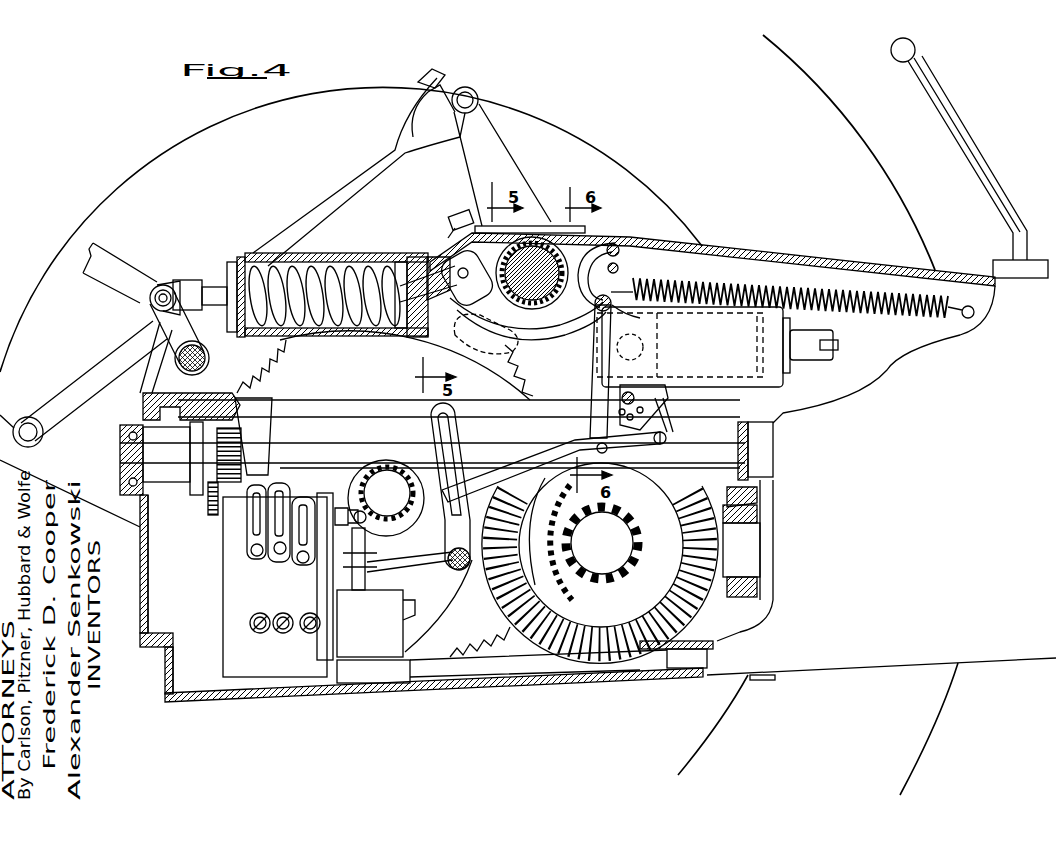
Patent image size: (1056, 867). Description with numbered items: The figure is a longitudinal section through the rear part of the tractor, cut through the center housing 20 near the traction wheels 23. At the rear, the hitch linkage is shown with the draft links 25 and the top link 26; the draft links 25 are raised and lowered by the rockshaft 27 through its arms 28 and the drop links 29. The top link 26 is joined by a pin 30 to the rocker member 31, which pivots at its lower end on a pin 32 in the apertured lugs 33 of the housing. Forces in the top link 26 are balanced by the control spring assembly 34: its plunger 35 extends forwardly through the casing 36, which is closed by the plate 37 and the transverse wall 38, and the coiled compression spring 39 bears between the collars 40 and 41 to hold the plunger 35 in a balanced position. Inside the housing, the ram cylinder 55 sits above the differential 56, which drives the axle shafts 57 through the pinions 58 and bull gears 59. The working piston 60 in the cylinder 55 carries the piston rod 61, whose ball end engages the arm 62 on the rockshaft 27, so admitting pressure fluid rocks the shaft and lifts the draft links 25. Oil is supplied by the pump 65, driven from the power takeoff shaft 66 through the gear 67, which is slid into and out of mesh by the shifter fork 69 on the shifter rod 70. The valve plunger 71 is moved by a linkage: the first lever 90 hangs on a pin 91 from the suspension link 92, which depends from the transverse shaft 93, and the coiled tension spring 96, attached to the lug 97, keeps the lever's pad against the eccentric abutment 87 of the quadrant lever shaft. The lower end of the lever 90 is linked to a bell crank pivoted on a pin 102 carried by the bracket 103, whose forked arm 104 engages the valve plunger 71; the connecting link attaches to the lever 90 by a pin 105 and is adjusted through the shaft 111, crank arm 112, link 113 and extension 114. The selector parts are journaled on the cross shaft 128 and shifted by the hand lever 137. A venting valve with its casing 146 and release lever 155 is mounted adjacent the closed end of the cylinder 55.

The center housing 20 is at (540, 690).
The rear wheels 23 is at (897, 187).
The draft links 25 is at (24, 398).
The top link 26 is at (118, 258).
The rockshaft 27 is at (500, 258).
The arms 28 is at (525, 167).
The drop links 29 is at (345, 180).
The pin 30 is at (165, 288).
The rocker member 31 is at (185, 330).
The pin 32 is at (178, 362).
The apertured lugs 33 is at (170, 378).
The control spring assembly 34 is at (368, 255).
The plunger 35 is at (210, 285).
The casing 36 is at (341, 256).
The plate 37 is at (232, 262).
The transverse wall 38 is at (420, 335).
The coiled compression spring 39 is at (320, 322).
The collar 40 is at (250, 262).
The collar 41 is at (399, 262).
The ram cylinder 55 is at (722, 387).
The differential 56 is at (690, 590).
The axle shafts 57 is at (408, 512).
The pinions 58 is at (600, 588).
The bull gears 59 is at (560, 580).
The working piston 60 is at (660, 352).
The piston rod 61 is at (555, 350).
The arm 62 is at (515, 340).
The pump 65 is at (222, 585).
The power takeoff shaft 66 is at (330, 466).
The gear 67 is at (240, 425).
The shifter fork 69 is at (268, 428).
The shifter rod 70 is at (325, 404).
The valve plunger 71 is at (372, 547).
The eccentric abutment 87 is at (620, 266).
The first lever 90 is at (590, 388).
The pin 91 is at (625, 325).
The suspension link 92 is at (588, 250).
The transverse shaft 93 is at (628, 247).
The coiled tension spring 96 is at (790, 294).
The lug 97 is at (617, 283).
The pin 102 is at (450, 552).
The bracket 103 is at (438, 590).
The arm 104 is at (402, 565).
The pin 105 is at (605, 445).
The shaft 111 is at (635, 383).
The crank arm 112 is at (672, 408).
The link 113 is at (675, 421).
The extension 114 is at (670, 438).
The cross shaft 128 is at (472, 283).
The hand lever 137 is at (450, 220).
The casing 146 is at (805, 360).
The lever 155 is at (840, 345).